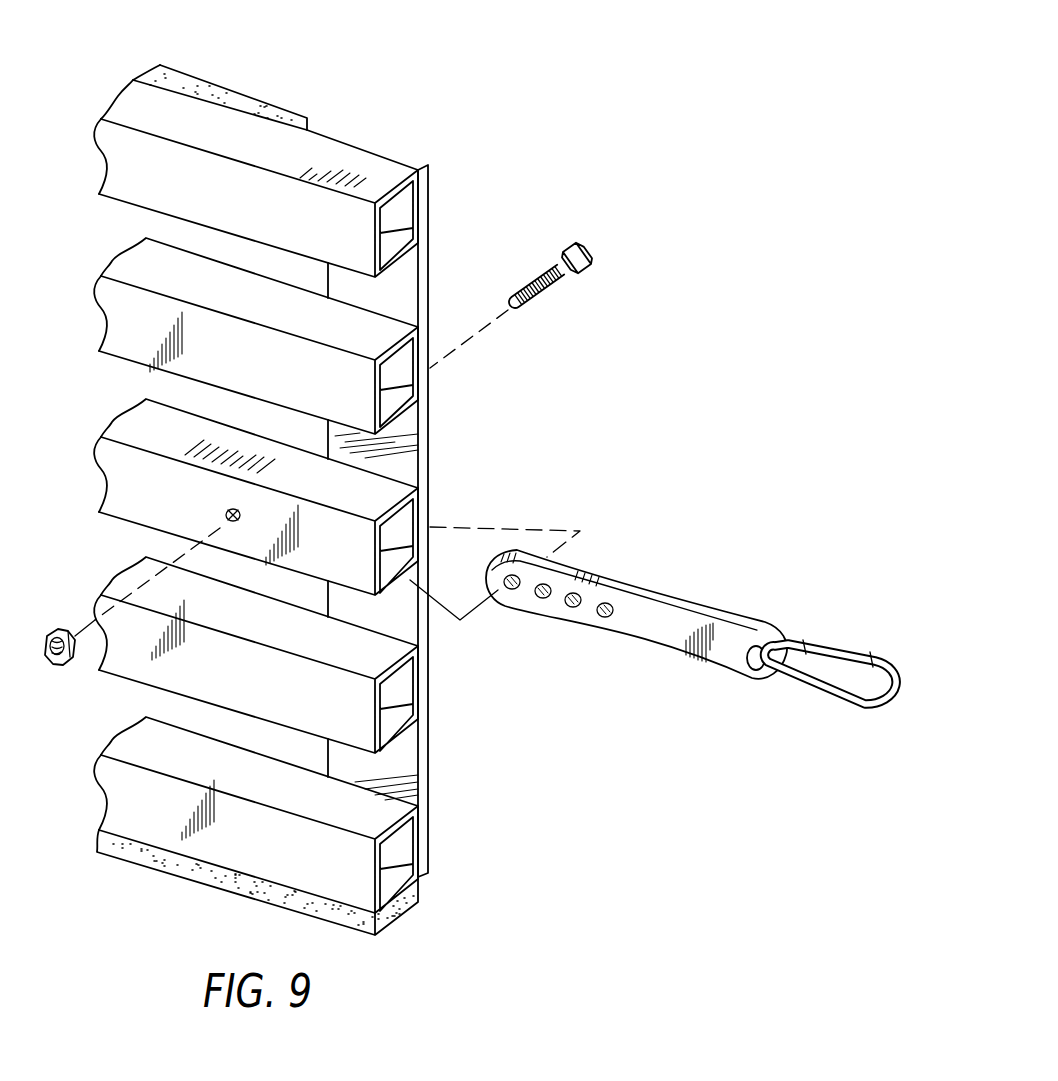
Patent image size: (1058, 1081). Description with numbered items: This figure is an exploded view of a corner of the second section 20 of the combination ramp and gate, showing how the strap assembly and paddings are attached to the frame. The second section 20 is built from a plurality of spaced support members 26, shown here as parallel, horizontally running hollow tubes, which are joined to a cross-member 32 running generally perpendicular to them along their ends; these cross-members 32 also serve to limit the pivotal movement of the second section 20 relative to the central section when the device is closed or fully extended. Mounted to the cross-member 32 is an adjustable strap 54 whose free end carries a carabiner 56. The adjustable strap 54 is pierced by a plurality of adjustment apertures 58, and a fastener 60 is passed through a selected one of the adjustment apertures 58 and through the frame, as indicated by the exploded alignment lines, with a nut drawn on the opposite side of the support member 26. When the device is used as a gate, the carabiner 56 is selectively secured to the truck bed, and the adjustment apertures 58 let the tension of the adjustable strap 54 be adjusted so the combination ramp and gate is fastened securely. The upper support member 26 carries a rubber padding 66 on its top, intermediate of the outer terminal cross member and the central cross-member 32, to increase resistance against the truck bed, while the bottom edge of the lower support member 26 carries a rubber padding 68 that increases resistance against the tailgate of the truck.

The second section 20 is at (445, 55).
The support members 26 is at (276, 145).
The cross-members 32 is at (430, 275).
The adjustable strap 54 is at (663, 642).
The carabiner 56 is at (812, 693).
The adjustment apertures 58 is at (508, 591).
The fastener 60 is at (590, 256).
The rubber padding 66 is at (220, 93).
The rubber padding 68 is at (148, 868).